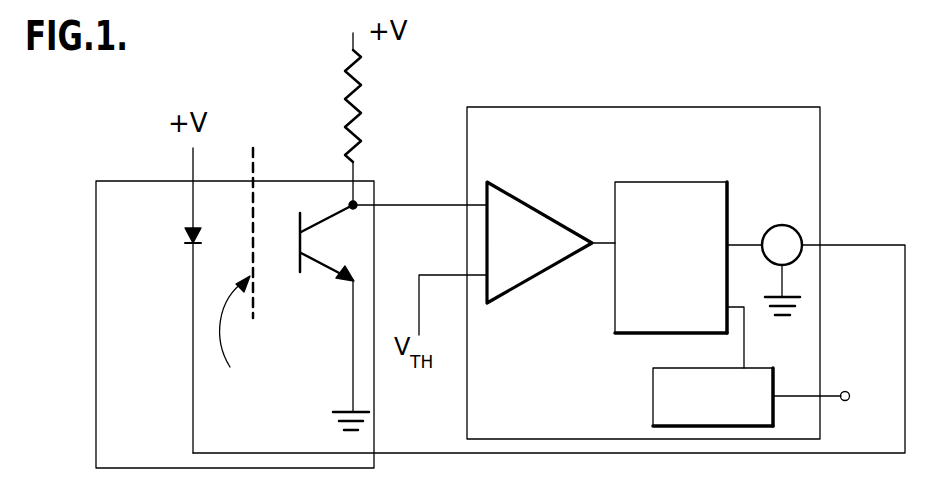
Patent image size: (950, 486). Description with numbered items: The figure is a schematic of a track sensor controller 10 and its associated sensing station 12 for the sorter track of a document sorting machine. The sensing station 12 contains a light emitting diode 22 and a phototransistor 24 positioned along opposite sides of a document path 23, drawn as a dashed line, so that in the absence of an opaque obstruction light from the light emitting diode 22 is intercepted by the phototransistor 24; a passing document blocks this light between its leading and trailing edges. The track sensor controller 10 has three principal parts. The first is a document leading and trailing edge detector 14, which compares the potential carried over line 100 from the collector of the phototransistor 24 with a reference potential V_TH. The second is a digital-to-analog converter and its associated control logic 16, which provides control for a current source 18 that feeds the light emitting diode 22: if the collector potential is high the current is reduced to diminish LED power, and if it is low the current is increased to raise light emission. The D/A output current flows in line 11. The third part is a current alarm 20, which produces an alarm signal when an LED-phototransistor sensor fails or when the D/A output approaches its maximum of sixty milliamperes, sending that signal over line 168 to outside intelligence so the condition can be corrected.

The track sensor controller 10 is at (545, 108).
The line 11 is at (905, 313).
The sensing station 12 is at (140, 340).
The document leading and trailing edge detector 14 is at (545, 260).
The digital-to-analog converter and associated control logic 16 is at (673, 320).
The current source 18 is at (782, 225).
The current alarm 20 is at (688, 416).
The light emitting diode 22 is at (185, 240).
The document path 23 is at (253, 159).
The phototransistor 24 is at (300, 237).
The line 100 is at (398, 206).
The line 168 is at (838, 386).